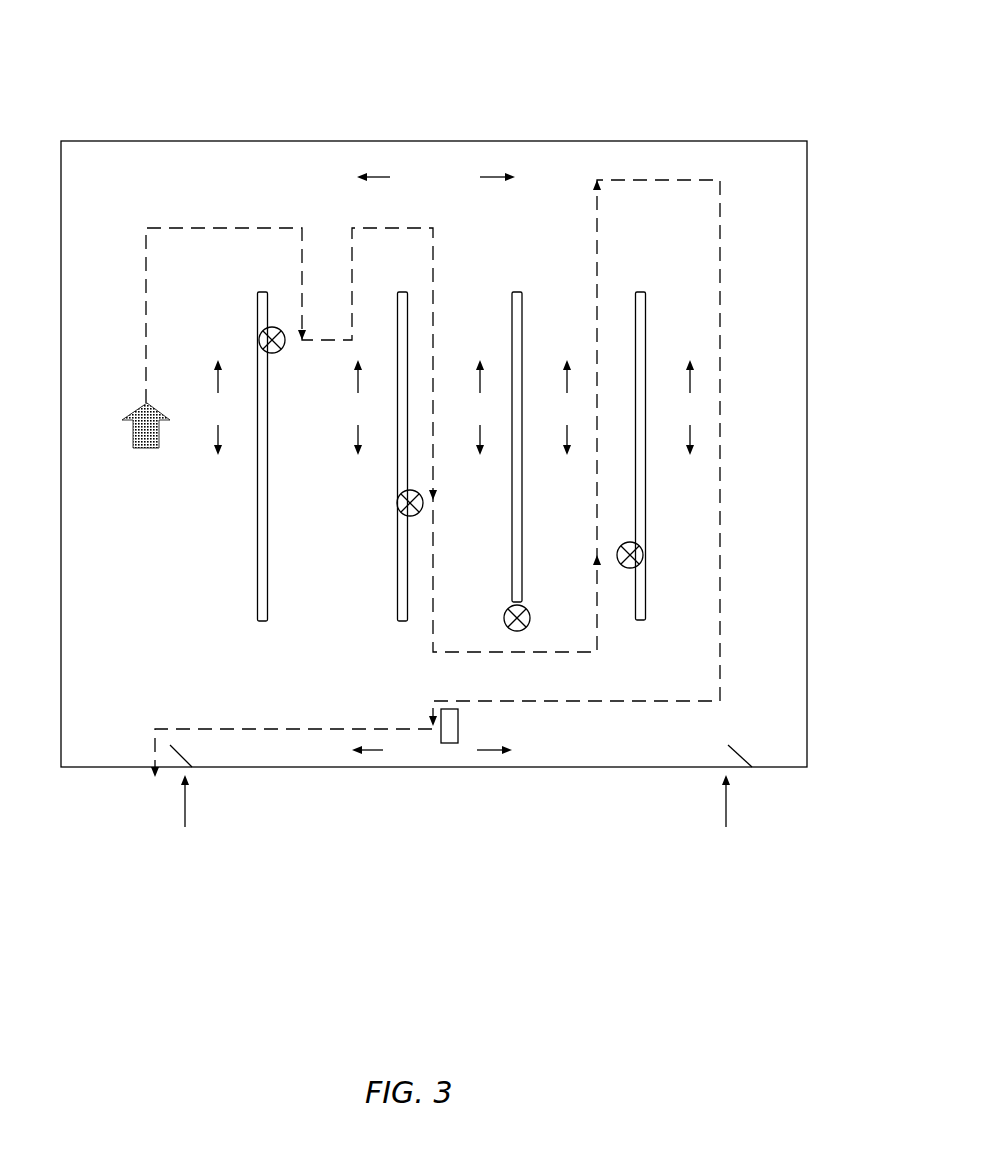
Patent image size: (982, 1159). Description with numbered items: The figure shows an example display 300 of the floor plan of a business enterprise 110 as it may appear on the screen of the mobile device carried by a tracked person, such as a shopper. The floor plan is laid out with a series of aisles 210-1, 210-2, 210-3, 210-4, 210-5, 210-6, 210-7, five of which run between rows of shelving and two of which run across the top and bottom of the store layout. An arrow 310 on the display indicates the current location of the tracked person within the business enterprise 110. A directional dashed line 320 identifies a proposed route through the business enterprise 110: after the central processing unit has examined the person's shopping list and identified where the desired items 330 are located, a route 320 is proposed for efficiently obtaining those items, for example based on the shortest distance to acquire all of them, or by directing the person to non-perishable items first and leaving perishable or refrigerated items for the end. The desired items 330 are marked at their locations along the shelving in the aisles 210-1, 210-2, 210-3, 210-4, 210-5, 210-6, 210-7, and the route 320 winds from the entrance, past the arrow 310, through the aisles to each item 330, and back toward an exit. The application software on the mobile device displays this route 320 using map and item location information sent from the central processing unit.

The display 300 is at (352, 69).
The business enterprise 110 is at (807, 141).
The aisle 210-1 is at (216, 407).
The aisle 210-2 is at (356, 407).
The aisle 210-3 is at (479, 407).
The aisle 210-4 is at (566, 407).
The aisle 210-5 is at (689, 407).
The aisle 210-6 is at (436, 178).
The aisle 210-7 is at (432, 756).
The arrow 310 is at (138, 448).
The directional dashed line 320 is at (147, 275).
The desired items 330 is at (263, 329).